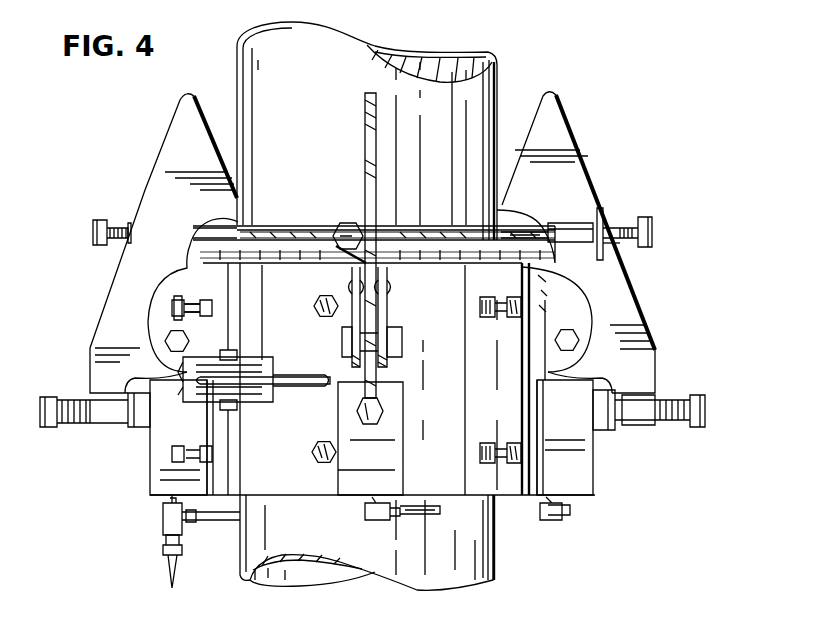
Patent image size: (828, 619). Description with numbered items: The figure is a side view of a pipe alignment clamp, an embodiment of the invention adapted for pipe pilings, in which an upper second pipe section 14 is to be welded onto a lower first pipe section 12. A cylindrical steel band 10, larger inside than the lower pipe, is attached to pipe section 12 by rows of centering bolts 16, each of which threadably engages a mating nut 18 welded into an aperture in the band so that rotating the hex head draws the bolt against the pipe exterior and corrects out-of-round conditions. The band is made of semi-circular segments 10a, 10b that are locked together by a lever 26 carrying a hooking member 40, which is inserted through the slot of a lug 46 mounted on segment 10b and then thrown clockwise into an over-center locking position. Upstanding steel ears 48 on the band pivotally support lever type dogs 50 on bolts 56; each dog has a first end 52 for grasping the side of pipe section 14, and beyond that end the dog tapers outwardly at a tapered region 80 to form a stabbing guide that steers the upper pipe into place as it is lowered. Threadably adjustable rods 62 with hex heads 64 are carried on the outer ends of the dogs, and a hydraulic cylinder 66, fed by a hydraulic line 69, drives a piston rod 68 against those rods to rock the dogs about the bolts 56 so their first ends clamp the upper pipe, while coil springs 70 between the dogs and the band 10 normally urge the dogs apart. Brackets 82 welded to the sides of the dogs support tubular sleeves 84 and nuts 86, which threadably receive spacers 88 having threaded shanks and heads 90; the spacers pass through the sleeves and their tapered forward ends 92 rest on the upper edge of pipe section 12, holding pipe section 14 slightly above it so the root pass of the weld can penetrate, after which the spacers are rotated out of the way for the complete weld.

The cylindrical steel band 10 is at (311, 508).
The semi-circular segment 10a is at (325, 485).
The semi-circular segment 10b is at (213, 498).
The first pipe section 12 is at (500, 558).
The second pipe section 14 is at (404, 78).
The centering bolts 16 is at (245, 301).
The nut 18 is at (480, 306).
The lever 26 is at (305, 388).
The hooking member 40 is at (280, 368).
The lug 46 is at (190, 384).
The steel ears 48 is at (170, 305).
The lever type dogs 50 is at (163, 130).
The first end of lever type dog 52 is at (240, 200).
The bolt 56 is at (164, 340).
The threadably adjustable rods 62 is at (82, 425).
The hex head 64 is at (50, 428).
The hydraulic cylinder 66 is at (160, 476).
The hydraulic piston rod 68 is at (140, 428).
The hydraulic line 69 is at (425, 518).
The coil springs 70 is at (387, 290).
The tapered region 80 is at (212, 122).
The brackets 82 is at (335, 226).
The tubular sleeves 84 is at (565, 222).
The nut 86 is at (615, 248).
The spacer 88 is at (120, 225).
The head of spacer 90 is at (96, 218).
The tapered forward end of spacer 92 is at (247, 242).